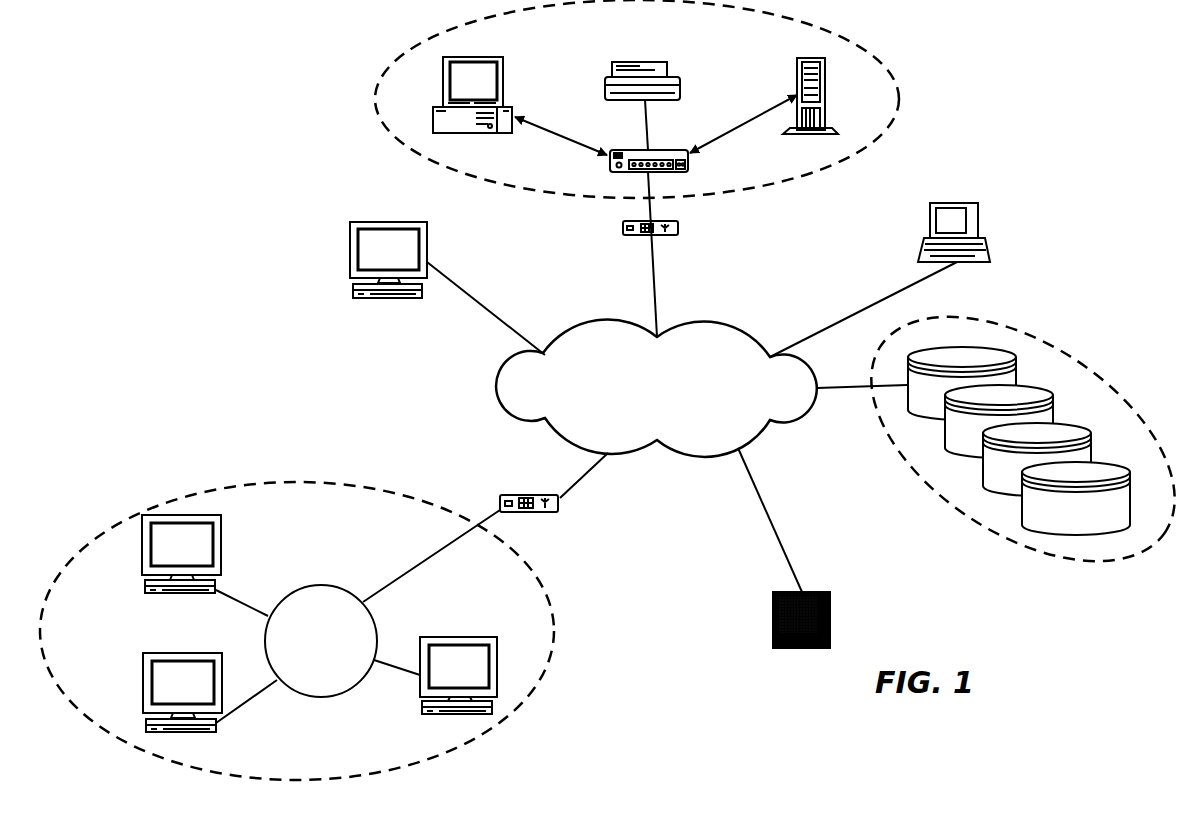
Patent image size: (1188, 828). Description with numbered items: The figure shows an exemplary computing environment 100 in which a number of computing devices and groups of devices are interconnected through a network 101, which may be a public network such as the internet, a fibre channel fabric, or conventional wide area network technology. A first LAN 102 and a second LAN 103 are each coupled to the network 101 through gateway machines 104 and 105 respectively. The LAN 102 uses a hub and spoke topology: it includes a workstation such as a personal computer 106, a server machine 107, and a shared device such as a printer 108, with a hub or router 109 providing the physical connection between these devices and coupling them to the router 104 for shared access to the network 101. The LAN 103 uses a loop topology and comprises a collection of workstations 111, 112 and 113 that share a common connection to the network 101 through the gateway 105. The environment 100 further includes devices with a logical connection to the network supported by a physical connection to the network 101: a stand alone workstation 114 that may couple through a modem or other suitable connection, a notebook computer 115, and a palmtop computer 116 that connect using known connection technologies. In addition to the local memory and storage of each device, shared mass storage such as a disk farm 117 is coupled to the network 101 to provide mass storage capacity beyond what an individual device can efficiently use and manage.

The computing environment 100 is at (245, 77).
The network 101 is at (513, 372).
The LAN 102 is at (393, 63).
The LAN 103 is at (318, 487).
The gateway machine 104 is at (632, 238).
The gateway machine 105 is at (516, 496).
The personal computer 106 is at (503, 58).
The server machine 107 is at (800, 60).
The printer 108 is at (645, 58).
The hub or router 109 is at (667, 148).
The workstation 111 is at (224, 533).
The workstation 112 is at (172, 653).
The workstation 113 is at (463, 637).
The stand alone workstation 114 is at (368, 222).
The notebook computer 115 is at (955, 203).
The palmtop computer 116 is at (778, 592).
The disk farm 117 is at (1017, 333).